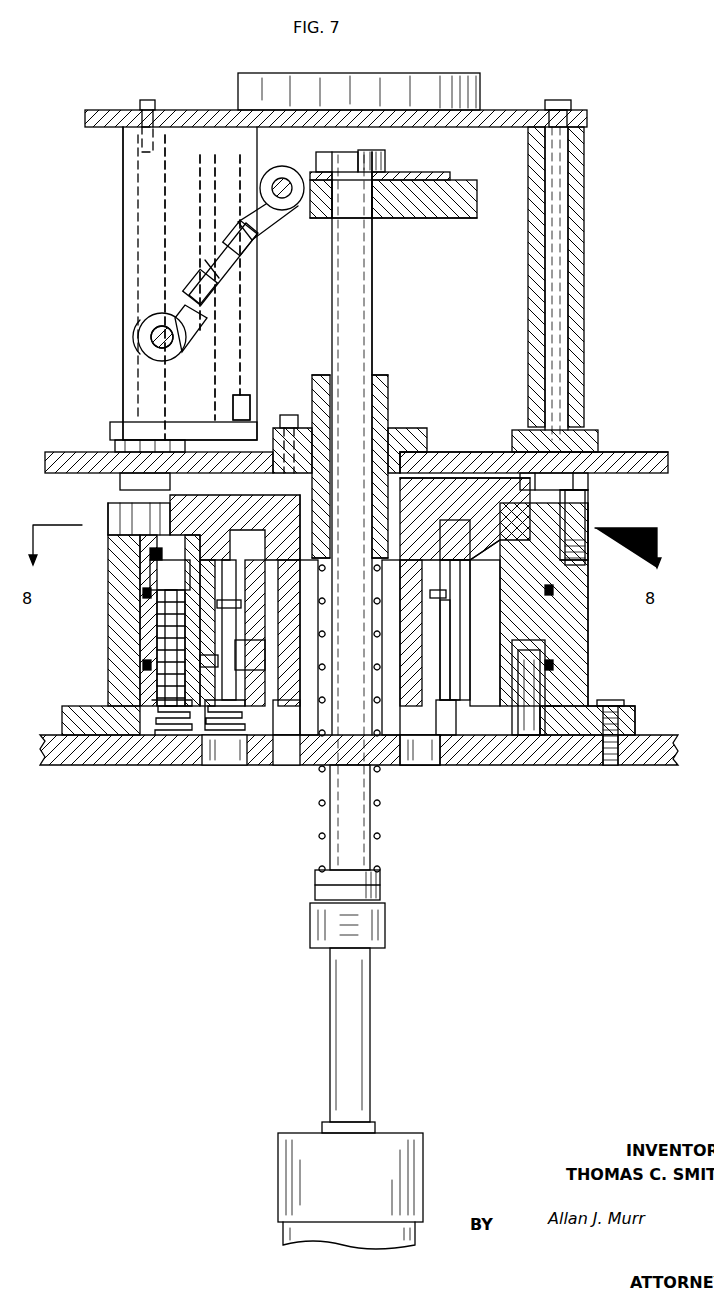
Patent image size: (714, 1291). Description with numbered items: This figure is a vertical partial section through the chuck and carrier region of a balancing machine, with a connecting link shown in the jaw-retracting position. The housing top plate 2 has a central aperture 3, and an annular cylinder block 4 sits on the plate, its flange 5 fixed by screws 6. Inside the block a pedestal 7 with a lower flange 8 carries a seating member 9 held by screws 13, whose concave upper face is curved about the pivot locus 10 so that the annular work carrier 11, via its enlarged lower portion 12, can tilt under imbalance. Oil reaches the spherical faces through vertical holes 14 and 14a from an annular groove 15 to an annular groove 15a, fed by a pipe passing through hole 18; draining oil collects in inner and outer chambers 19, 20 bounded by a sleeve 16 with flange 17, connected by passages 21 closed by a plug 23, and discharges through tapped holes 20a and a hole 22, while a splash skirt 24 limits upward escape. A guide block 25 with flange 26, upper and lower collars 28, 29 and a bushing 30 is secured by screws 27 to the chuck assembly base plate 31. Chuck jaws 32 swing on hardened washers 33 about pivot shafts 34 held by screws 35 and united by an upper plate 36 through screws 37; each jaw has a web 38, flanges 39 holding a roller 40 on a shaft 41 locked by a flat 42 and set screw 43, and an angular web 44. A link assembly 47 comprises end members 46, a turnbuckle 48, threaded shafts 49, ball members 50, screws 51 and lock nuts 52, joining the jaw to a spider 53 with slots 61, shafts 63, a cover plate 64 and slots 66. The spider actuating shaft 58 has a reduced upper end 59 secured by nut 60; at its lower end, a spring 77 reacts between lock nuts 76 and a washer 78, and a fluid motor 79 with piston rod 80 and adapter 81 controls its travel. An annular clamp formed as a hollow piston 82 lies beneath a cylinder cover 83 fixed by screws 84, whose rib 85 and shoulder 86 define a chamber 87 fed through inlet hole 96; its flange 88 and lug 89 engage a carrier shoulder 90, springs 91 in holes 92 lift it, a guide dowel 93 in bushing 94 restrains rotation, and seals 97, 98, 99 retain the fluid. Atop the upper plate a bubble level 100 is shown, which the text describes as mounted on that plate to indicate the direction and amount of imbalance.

The top plate 2 is at (666, 734).
The central aperture 3 is at (396, 768).
The annular cylinder block 4 is at (590, 656).
The annular flange 5 is at (636, 718).
The screws 6 is at (614, 700).
The pedestal 7 is at (510, 650).
The annular flange 8 is at (552, 726).
The seating member 9 is at (457, 597).
The pivot locus 10 is at (374, 276).
The annular work carrier 11 is at (464, 464).
The enlarged lower portion 12 is at (226, 630).
The screws 13 is at (244, 602).
The vertical holes 14 is at (466, 630).
The vertical holes 14a is at (454, 694).
The annular groove 15 is at (454, 618).
The annular groove 15a is at (450, 540).
The sleeve 16 is at (302, 614).
The flange 17 is at (284, 766).
The hole 18 is at (442, 766).
The inner chamber 19 is at (276, 656).
The outer chamber 20 is at (488, 567).
The pipe-tapped holes 20a is at (206, 766).
The passages 21 is at (250, 636).
The hole 22 is at (222, 766).
The fluid-sealing plug 23 is at (217, 670).
The annular splash skirt 24 is at (182, 539).
The guide block 25 is at (404, 432).
The annular flange 26 is at (430, 439).
The screws 27 is at (291, 416).
The upwardly extending collar 28 is at (390, 390).
The downwardly extending collar 29 is at (294, 527).
The bushing 30 is at (390, 378).
The chuck assembly base plate 31 is at (636, 452).
The chuck jaws 32 is at (120, 404).
The hardened washers 33 is at (110, 448).
The pivot shafts 34 is at (580, 296).
The screw 35 is at (590, 484).
The upper plate 36 is at (590, 120).
The screws 37 is at (558, 102).
The web 38 is at (206, 325).
The flanges 39 is at (206, 132).
The roller 40 is at (190, 196).
The shaft 41 is at (186, 226).
The flat 42 is at (250, 400).
The set screw 43 is at (261, 282).
The angular web 44 is at (254, 300).
The end member 46 is at (144, 352).
The link assembly 47 is at (140, 356).
The turnbuckle 48 is at (206, 262).
The threaded shafts 49 is at (255, 275).
The ball members 50 is at (150, 328).
The screws 51 is at (148, 342).
The lock nuts 52 is at (182, 284).
The spider 53 is at (446, 220).
The spider actuating shaft 58 is at (374, 302).
The upper end portion 59 is at (352, 199).
The nut 60 is at (384, 166).
The slots 61 is at (296, 216).
The shaft 63 is at (281, 174).
The cover plate 64 is at (412, 182).
The slots 66 is at (320, 172).
The lock nuts 76 is at (382, 872).
The spring 77 is at (382, 800).
The washer 78 is at (360, 558).
The fluid motor 79 is at (406, 1166).
The piston rod 80 is at (370, 1054).
The adapter 81 is at (386, 930).
The hollow piston 82 is at (574, 632).
The annular cylinder cover 83 is at (588, 512).
The screws 84 is at (588, 492).
The annular rib 85 is at (584, 558).
The annular shoulder 86 is at (554, 582).
The annular chamber 87 is at (574, 574).
The annular flange 88 is at (464, 508).
The annular lug 89 is at (434, 504).
The annular shoulder 90 is at (480, 517).
The springs 91 is at (150, 646).
The holes 92 is at (142, 630).
The guide dowel 93 is at (532, 766).
The bushing 94 is at (544, 660).
The inlet hole 96 is at (110, 506).
The fluid seal 97 is at (170, 620).
The fluid seal 98 is at (150, 554).
The fluid seal 99 is at (142, 593).
The motor 100 is at (400, 74).